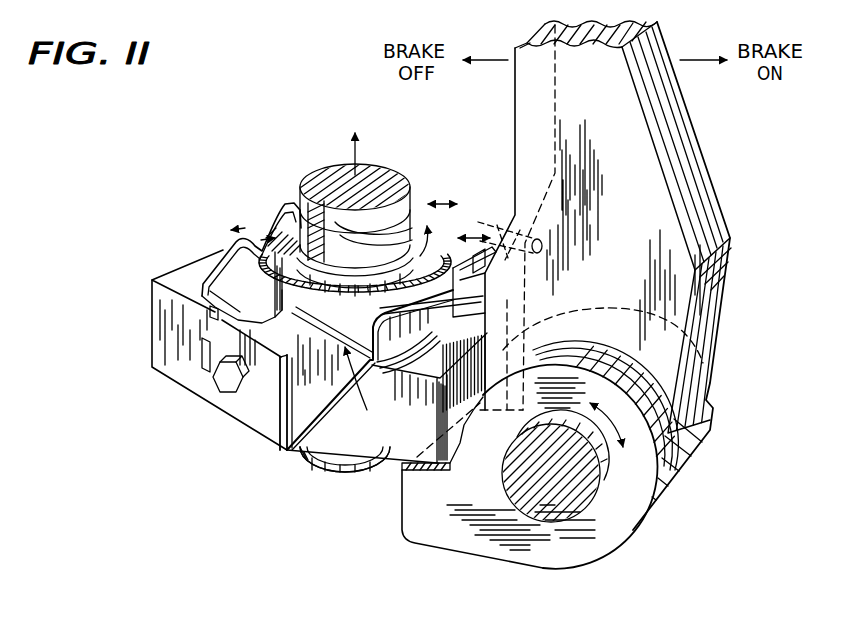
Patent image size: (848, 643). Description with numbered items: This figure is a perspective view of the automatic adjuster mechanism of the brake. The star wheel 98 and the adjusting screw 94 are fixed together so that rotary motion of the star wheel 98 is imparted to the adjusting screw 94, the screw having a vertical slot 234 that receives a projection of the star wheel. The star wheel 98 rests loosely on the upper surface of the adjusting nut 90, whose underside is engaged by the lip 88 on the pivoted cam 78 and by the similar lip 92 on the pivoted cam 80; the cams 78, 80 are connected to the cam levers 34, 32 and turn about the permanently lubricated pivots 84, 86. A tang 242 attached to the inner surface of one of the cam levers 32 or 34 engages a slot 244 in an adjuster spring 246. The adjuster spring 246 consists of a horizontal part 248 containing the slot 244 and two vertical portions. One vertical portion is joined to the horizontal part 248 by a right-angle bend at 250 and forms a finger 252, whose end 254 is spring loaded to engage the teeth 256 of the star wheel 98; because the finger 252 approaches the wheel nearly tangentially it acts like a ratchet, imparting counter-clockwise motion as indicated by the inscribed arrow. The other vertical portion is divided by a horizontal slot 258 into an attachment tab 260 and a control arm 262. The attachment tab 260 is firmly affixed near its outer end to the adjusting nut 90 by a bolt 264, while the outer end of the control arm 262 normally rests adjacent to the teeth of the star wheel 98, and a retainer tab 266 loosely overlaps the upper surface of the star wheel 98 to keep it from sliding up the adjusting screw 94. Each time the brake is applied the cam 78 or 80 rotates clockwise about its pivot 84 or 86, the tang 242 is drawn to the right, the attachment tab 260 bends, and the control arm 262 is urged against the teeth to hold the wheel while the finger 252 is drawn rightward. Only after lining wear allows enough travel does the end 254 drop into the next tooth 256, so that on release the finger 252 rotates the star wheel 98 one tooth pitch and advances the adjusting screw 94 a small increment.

The cam lever 32 is at (574, 275).
The cam lever 34 is at (528, 102).
The pivoted cam 78 is at (604, 455).
The pivoted cam 80 is at (623, 512).
The pivot 84 is at (560, 500).
The pivot 86 is at (562, 507).
The lip 88 is at (459, 482).
The lip 92 is at (415, 482).
The adjusting nut 90 is at (158, 303).
The adjusting screw 94 is at (333, 172).
The star wheel 98 is at (251, 250).
The vertical slot 234 is at (320, 217).
The tang 242 is at (473, 257).
The slot 244 is at (457, 300).
The adjuster spring 246 is at (367, 393).
The horizontal part 248 is at (355, 363).
The right-angle bend 250 is at (497, 214).
The finger 252 is at (458, 212).
The end of the finger 254 is at (426, 208).
The teeth 256 is at (416, 212).
The horizontal slot 258 is at (278, 362).
The attachment tab 260 is at (240, 402).
The control arm 262 is at (215, 310).
The bolt 264 is at (218, 377).
The retainer tab 266 is at (278, 232).